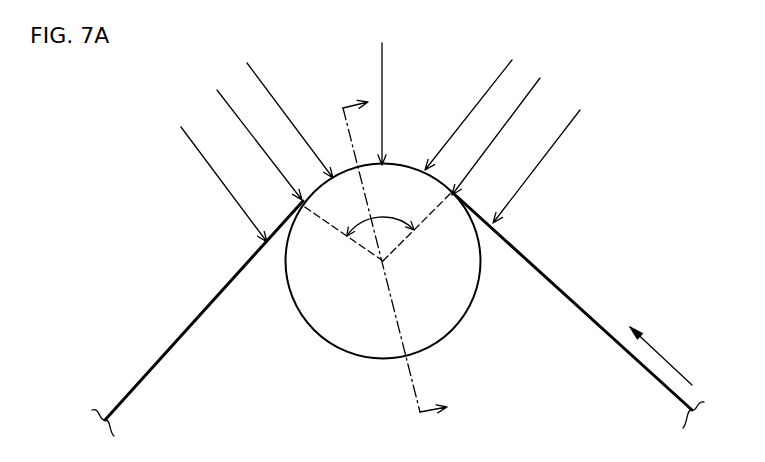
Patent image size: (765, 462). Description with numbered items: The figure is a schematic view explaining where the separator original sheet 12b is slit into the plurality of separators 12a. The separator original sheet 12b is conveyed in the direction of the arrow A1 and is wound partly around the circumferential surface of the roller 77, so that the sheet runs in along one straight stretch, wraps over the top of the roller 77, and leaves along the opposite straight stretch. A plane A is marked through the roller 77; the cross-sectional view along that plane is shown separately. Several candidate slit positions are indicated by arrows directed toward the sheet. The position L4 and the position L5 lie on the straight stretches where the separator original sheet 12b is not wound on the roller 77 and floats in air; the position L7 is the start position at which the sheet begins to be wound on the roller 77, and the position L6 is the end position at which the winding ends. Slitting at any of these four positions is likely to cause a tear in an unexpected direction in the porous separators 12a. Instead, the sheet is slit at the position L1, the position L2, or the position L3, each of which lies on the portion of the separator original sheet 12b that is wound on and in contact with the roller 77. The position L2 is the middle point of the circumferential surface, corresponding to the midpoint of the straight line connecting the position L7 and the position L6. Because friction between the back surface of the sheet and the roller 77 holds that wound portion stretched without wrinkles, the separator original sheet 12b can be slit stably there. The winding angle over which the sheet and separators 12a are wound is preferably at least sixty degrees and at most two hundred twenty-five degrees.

The separator 12a is at (198, 317).
The separator original sheet 12b is at (572, 300).
The roller 77 is at (448, 320).
The arrow A1 is at (668, 360).
The plane A- A is at (384, 265).
The position L1 is at (283, 108).
The middle position L2 is at (381, 89).
The position L3 is at (472, 101).
The position L4 is at (218, 171).
The position L5 is at (539, 154).
The end position L6 is at (253, 131).
The start position L7 is at (500, 125).